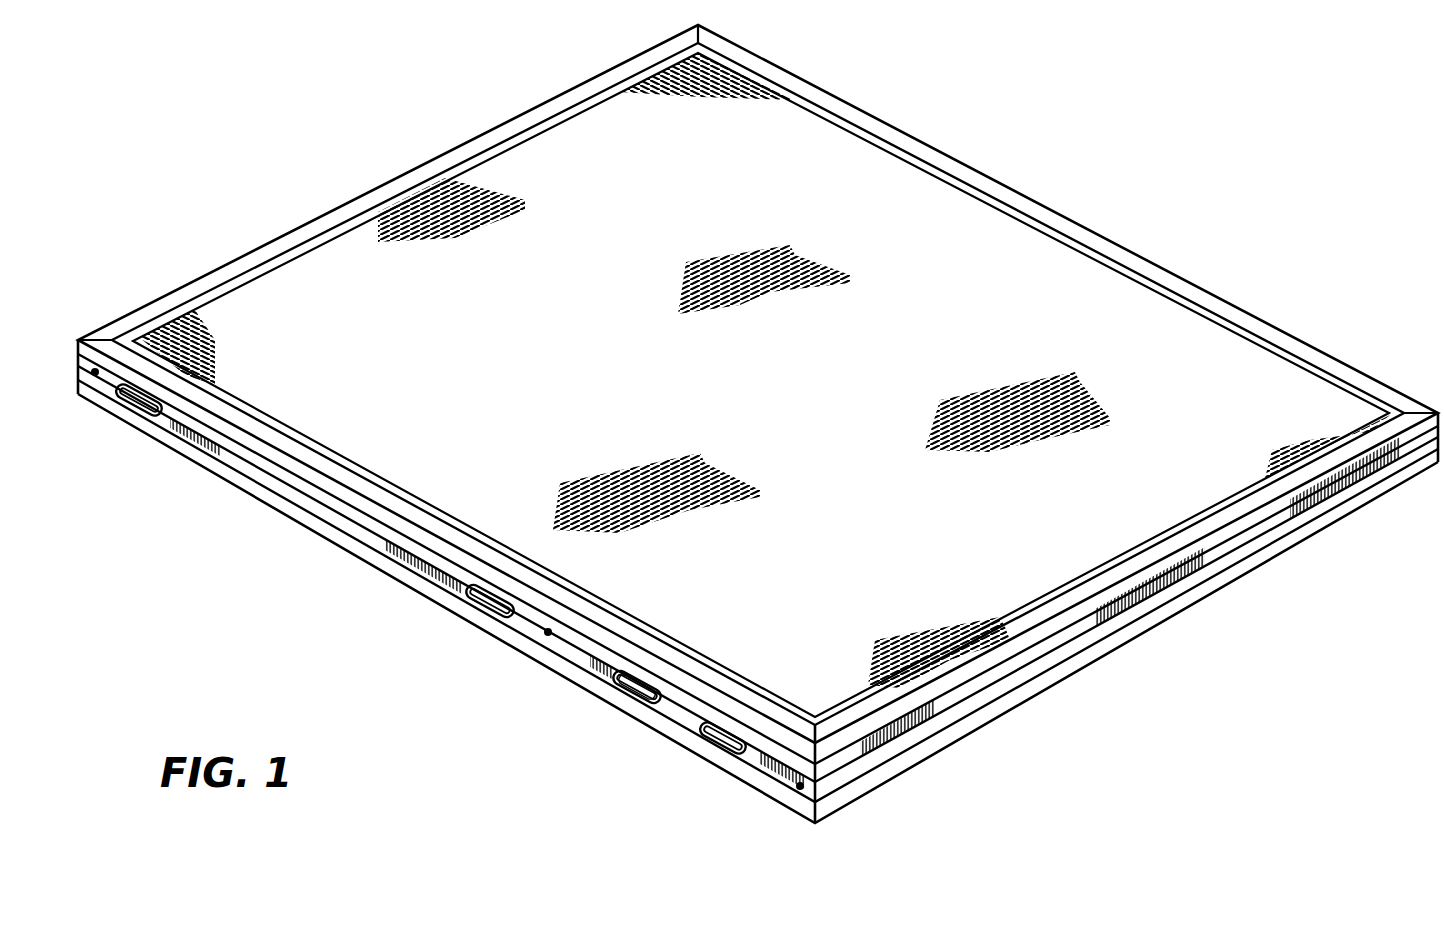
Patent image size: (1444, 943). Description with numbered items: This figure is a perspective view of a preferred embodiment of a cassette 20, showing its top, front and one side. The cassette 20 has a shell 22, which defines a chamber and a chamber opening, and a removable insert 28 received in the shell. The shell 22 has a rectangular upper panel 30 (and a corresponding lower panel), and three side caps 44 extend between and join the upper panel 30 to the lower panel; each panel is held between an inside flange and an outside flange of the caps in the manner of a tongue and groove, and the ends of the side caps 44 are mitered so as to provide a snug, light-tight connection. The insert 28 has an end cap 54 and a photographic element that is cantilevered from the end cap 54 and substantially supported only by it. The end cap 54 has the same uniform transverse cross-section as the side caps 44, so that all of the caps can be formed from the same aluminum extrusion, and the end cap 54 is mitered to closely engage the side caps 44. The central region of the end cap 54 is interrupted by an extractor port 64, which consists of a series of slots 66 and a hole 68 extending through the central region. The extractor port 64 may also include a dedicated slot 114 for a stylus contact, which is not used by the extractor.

The cassette 20 is at (1030, 134).
The shell 22 is at (1100, 660).
The removable insert 28 is at (274, 506).
The upper panel 30 is at (803, 394).
The side cap 44 is at (467, 145).
The end cap 54 is at (380, 556).
The extractor port 64 is at (132, 410).
The slots 66 is at (431, 568).
The hole 68 is at (548, 640).
The dedicated slot 114 is at (628, 698).